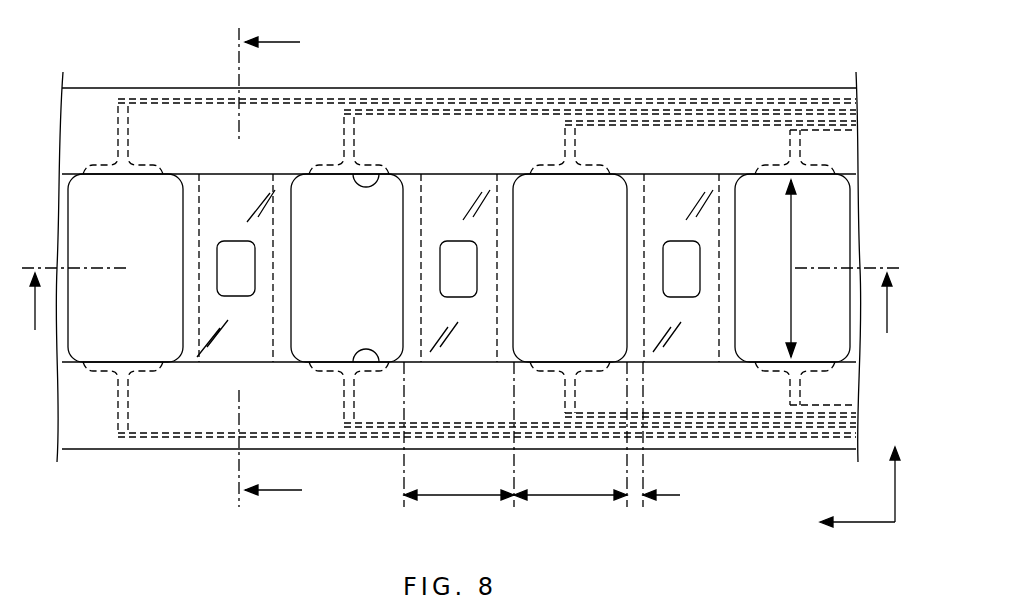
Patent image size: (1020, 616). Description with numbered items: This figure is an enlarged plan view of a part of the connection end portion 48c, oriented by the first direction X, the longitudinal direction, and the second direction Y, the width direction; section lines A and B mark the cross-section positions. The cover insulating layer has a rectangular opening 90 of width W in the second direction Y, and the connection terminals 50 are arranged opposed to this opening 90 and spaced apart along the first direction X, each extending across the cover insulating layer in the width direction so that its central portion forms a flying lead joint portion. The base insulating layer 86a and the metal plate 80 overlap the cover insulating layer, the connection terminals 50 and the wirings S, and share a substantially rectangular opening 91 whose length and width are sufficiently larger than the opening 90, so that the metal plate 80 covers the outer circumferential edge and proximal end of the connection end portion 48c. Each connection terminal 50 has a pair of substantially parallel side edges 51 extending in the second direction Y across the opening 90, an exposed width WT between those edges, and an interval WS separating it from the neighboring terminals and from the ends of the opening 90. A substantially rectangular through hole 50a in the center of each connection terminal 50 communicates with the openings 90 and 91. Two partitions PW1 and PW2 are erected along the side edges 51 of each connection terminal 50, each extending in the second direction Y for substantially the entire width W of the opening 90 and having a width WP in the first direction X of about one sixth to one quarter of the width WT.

The connection end portion 48c is at (101, 83).
The metal plate 80 is at (110, 97).
The connection terminal 50 is at (222, 203).
The side edge 51 is at (181, 228).
The through hole 50a is at (237, 268).
The opening 90 is at (364, 187).
The opening 91 is at (370, 376).
The base insulating layer 86a is at (828, 143).
The wiring S is at (710, 97).
The partition PW1 is at (190, 313).
The partition PW2 is at (283, 327).
The width W is at (803, 268).
The width WT is at (459, 445).
The interval WS is at (570, 445).
The width WP is at (648, 451).
The section line A- A is at (461, 286).
The section line B- B is at (266, 268).
The first direction X is at (847, 519).
The second direction Y is at (894, 469).